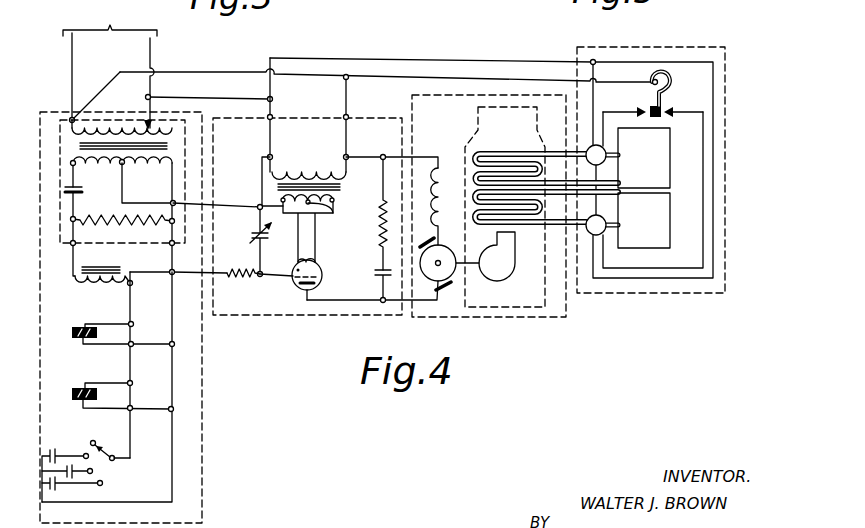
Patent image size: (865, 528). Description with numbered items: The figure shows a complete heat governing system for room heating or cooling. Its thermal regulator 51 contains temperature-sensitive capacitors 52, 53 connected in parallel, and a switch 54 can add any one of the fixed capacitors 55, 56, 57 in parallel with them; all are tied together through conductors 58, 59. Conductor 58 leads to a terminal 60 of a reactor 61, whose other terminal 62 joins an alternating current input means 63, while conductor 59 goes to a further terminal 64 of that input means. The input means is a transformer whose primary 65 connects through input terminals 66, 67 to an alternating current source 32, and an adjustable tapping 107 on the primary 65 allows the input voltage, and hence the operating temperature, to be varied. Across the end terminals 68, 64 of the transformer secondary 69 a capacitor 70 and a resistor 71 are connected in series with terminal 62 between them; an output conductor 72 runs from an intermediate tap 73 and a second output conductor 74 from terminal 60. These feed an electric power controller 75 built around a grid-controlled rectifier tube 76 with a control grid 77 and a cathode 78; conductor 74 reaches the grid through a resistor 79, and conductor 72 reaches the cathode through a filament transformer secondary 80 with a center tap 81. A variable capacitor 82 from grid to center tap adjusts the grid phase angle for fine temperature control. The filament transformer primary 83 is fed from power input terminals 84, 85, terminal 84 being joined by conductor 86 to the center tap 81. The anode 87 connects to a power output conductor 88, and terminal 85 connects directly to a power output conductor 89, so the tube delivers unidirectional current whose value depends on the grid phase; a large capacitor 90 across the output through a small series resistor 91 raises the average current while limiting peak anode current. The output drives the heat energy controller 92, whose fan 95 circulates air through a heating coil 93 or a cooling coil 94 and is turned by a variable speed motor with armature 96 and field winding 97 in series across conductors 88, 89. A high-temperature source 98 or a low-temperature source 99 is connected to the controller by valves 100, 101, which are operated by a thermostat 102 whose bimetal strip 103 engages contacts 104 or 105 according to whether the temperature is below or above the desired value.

The alternating current source 32 is at (110, 66).
The thermal regulator 51 is at (204, 384).
The temperature-sensitive capacitor 52 is at (78, 326).
The temperature-sensitive capacitor 53 is at (78, 387).
The switch 54 is at (101, 450).
The fixed capacitor 55 is at (53, 449).
The fixed capacitor 56 is at (94, 470).
The fixed capacitor 57 is at (57, 487).
The conductor 58 is at (130, 310).
The conductor 59 is at (172, 315).
The terminal 60 is at (129, 281).
The reactor 61 is at (100, 267).
The terminal 62 is at (71, 245).
The alternating current input means 63 is at (59, 222).
The terminal 64 is at (157, 182).
The primary 65 is at (113, 130).
The input terminal 66 is at (71, 118).
The input terminal 67 is at (160, 100).
The end terminal 68 is at (71, 162).
The transformer secondary 69 is at (122, 169).
The capacitor 70 is at (64, 190).
The resistor 71 is at (120, 226).
The output conductor 72 is at (233, 205).
The intermediate tap 73 is at (124, 172).
The output conductor 74 is at (190, 274).
The electric power controller 75 is at (245, 316).
The grid-controlled rectifier tube 76 is at (307, 277).
The control grid 77 is at (292, 282).
The cathode 78 is at (305, 261).
The resistor 79 is at (236, 278).
The filament transformer secondary 80 is at (335, 200).
The center tap 81 is at (334, 214).
The capacitor 82 is at (251, 237).
The primary 83 is at (320, 177).
The power input terminal 84 is at (272, 116).
The power input terminal 85 is at (348, 116).
The conductor 86 is at (261, 158).
The anode 87 is at (305, 292).
The power output conductor 88 is at (430, 302).
The power output conductor 89 is at (410, 158).
The capacitor 90 is at (376, 276).
The series resistor 91 is at (380, 240).
The heat energy controller 92 is at (527, 318).
The heating coil 93 is at (515, 150).
The cooling coil 94 is at (494, 228).
The fan 95 is at (506, 279).
The armature 96 is at (442, 249).
The field winding 97 is at (440, 190).
The source of heat-containing medium at high temperature 98 is at (671, 160).
The source of heat-containing medium at low temperature 99 is at (671, 222).
The valve 100 is at (590, 164).
The valve 101 is at (605, 207).
The thermostat 102 is at (645, 80).
The bimetal strip 103 is at (669, 88).
The contact 104 is at (668, 108).
The contact 105 is at (643, 108).
The adjustable tapping 107 is at (148, 122).